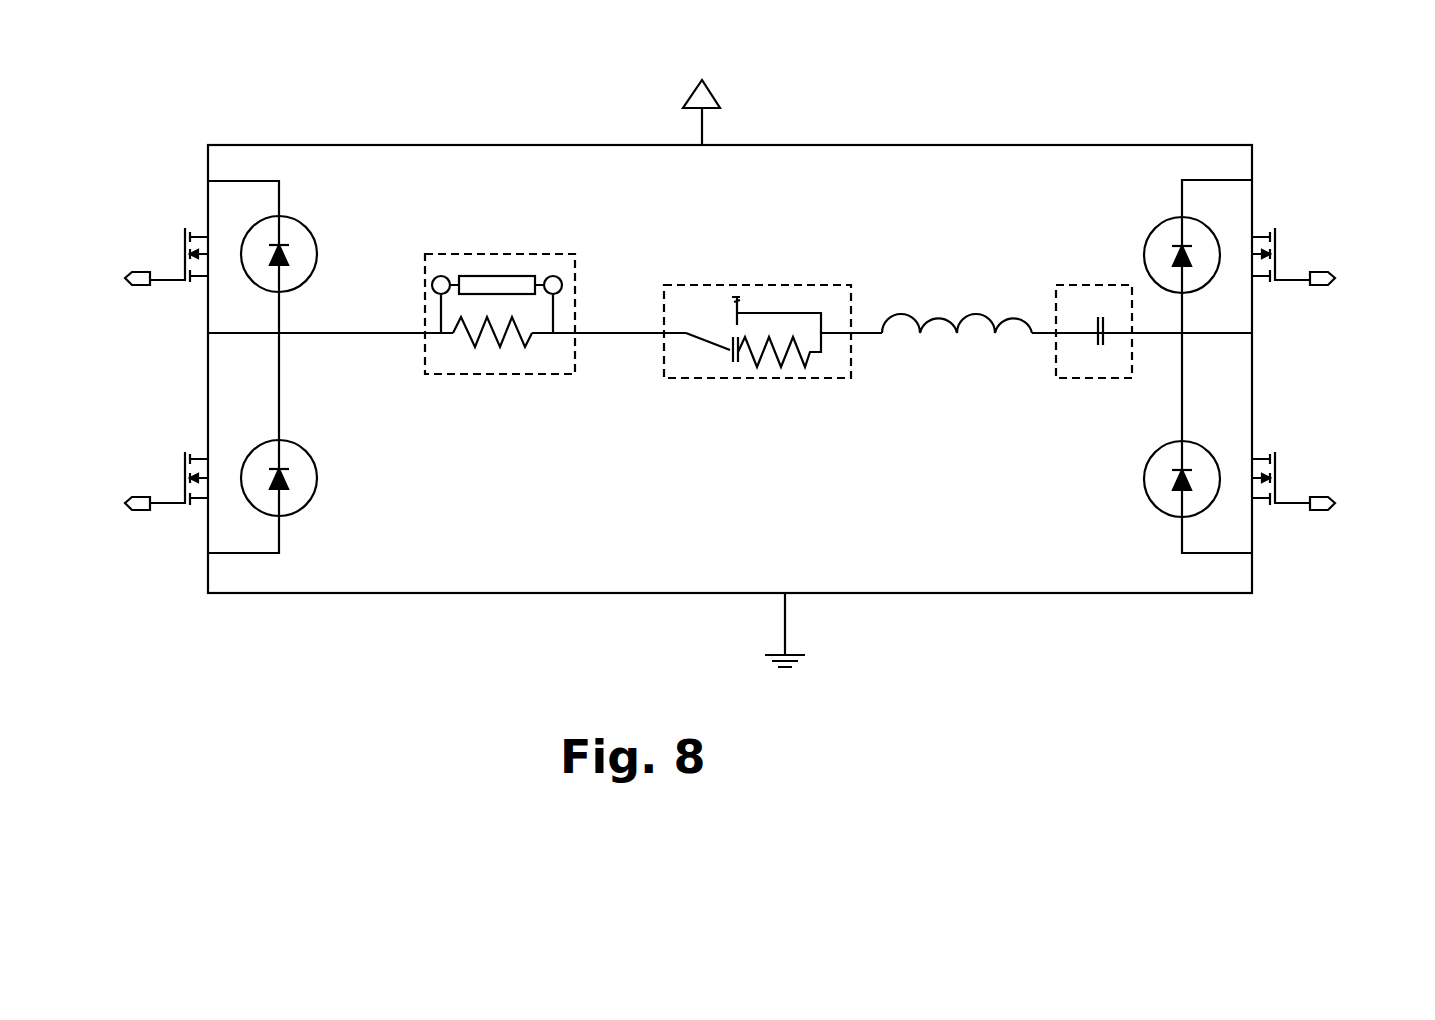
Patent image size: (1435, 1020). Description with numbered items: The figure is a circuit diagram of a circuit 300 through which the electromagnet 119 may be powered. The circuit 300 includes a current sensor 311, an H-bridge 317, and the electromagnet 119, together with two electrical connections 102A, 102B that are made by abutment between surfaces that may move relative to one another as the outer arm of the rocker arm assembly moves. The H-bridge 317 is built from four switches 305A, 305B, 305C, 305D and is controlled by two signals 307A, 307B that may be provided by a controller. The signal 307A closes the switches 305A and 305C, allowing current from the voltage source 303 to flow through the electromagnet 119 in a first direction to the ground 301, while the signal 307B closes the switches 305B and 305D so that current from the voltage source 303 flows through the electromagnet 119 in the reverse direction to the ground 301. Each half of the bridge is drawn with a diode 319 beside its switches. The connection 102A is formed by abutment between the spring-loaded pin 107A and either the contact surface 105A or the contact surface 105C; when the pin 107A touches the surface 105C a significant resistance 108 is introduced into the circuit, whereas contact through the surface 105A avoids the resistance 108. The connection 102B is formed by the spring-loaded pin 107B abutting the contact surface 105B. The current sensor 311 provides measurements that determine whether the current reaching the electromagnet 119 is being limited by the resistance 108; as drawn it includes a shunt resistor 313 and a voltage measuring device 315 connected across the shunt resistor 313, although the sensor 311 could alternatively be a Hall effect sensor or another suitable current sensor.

The circuit 300 is at (182, 98).
The ground 301 is at (785, 620).
The voltage source 303 is at (708, 100).
The switch 305A is at (185, 240).
The switch 305B is at (185, 465).
The switch 305C is at (1277, 460).
The switch 305D is at (1280, 250).
The signal 307A is at (136, 272).
The signal 307B is at (138, 497).
The current sensor 311 is at (443, 215).
The shunt resistor 313 is at (503, 316).
The voltage measuring device 315 is at (517, 285).
The H-bridge 317 is at (1275, 68).
The diode 319 is at (1208, 225).
The electrical connection 102A is at (827, 384).
The electrical connection 102B is at (1120, 359).
The contact surface 105A is at (737, 297).
The contact surface 105B is at (1098, 317).
The contact surface 105C is at (742, 362).
The spring-loaded pin 107A is at (733, 355).
The spring-loaded pin 107B is at (1103, 345).
The resistance 108 is at (786, 350).
The electromagnet 119 is at (942, 315).